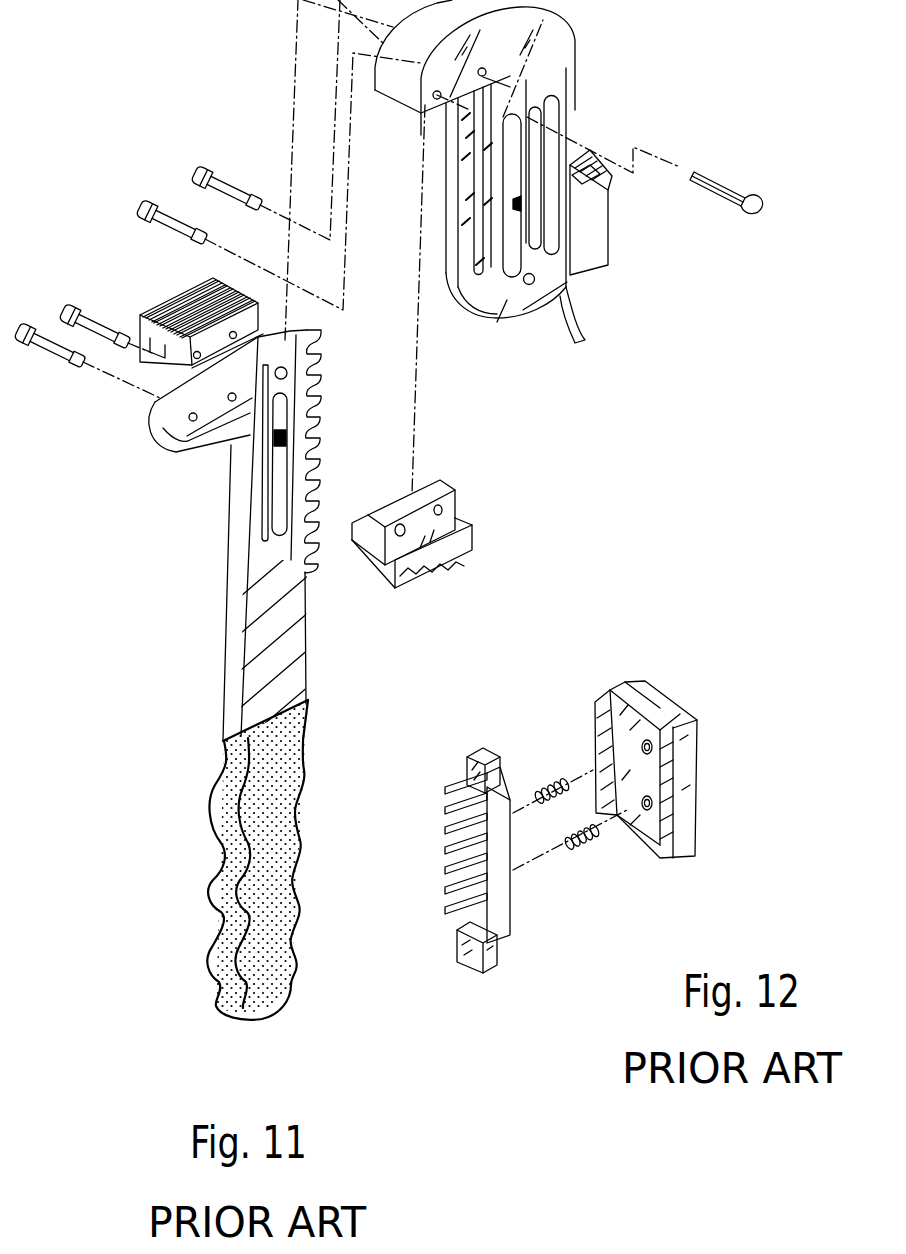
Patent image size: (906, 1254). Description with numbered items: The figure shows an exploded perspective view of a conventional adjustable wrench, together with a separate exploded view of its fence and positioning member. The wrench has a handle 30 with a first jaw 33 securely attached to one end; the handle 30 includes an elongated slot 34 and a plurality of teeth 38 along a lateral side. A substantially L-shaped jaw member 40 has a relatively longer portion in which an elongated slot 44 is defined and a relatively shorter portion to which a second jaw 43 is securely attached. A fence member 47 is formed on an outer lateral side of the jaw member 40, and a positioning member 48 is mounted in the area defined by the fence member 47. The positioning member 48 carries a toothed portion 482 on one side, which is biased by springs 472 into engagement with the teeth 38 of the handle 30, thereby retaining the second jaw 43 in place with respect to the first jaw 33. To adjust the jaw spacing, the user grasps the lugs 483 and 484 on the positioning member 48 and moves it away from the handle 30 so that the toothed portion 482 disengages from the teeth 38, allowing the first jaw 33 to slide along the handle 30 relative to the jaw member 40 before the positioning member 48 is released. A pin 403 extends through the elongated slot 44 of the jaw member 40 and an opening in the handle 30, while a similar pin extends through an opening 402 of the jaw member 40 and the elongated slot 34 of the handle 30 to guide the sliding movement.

In FIG. 11, the handle 30 is at (257, 644).
In FIG. 11, the first jaw 33 is at (213, 278).
In FIG. 11, the elongated slot 34 is at (273, 507).
In FIG. 11, the teeth 38 is at (381, 401).
In FIG. 11, the jaw member 40 is at (631, 43).
In FIG. 11, the opening 402 is at (536, 279).
In FIG. 11, the pin 403 is at (754, 223).
In FIG. 11, the second jaw 43 is at (495, 435).
In FIG. 11, the elongated slot 44 is at (498, 320).
In FIG. 11, the fence member 47 is at (669, 200).
In FIG. 12, the fence member 47 is at (759, 740).
In FIG. 11, the positioning member 48 is at (578, 178).
In FIG. 12, the positioning member 48 is at (578, 877).
In FIG. 12, the springs 472 is at (584, 720).
In FIG. 12, the toothed portion 482 is at (440, 873).
In FIG. 12, the lug 483 is at (521, 695).
In FIG. 12, the lug 484 is at (582, 938).